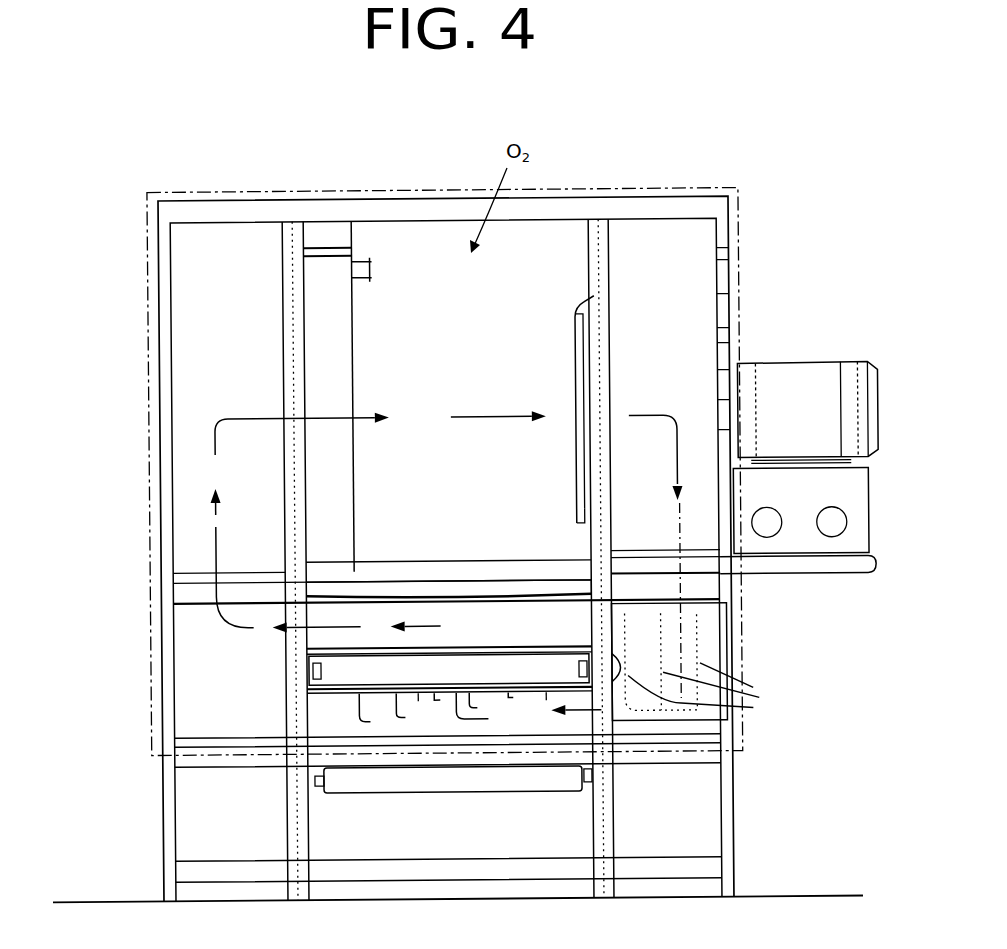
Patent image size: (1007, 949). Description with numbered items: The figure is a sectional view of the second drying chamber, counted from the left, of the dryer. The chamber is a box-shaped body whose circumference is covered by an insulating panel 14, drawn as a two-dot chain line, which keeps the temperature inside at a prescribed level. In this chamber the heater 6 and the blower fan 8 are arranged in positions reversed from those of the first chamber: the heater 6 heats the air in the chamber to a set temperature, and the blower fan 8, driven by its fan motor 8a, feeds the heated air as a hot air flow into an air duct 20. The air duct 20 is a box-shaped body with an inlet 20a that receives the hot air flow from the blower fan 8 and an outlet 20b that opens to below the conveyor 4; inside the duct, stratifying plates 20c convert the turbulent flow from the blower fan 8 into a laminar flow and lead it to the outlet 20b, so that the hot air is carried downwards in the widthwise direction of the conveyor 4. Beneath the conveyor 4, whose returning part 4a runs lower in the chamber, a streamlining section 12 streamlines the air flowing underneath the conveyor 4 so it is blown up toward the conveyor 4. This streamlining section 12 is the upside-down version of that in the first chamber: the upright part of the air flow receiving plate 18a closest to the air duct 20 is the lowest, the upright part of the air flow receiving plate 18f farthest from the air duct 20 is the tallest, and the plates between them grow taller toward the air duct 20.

The conveyor 4 is at (486, 661).
The returning part of the conveyor 4a is at (388, 796).
The heater 6 is at (322, 306).
The blower fan 8 is at (678, 298).
The fan motor 8a is at (803, 373).
The streamlining section 12 is at (418, 695).
The insulating panel 14 is at (155, 355).
The air flow receiving plate 18a is at (545, 697).
The air flow receiving plate 18f is at (357, 704).
The air duct 20 is at (716, 644).
The inlet 20a is at (715, 599).
The outlet 20b is at (580, 752).
The stratifying plates 20c is at (752, 690).